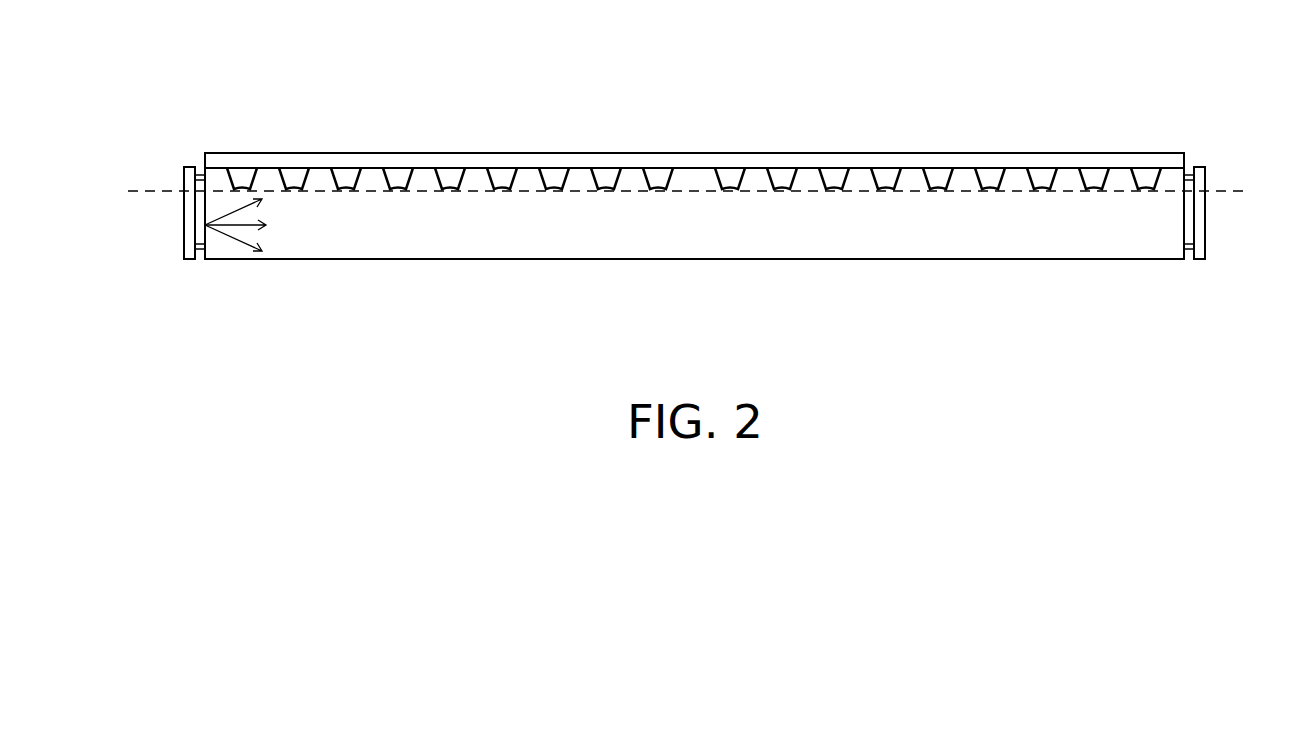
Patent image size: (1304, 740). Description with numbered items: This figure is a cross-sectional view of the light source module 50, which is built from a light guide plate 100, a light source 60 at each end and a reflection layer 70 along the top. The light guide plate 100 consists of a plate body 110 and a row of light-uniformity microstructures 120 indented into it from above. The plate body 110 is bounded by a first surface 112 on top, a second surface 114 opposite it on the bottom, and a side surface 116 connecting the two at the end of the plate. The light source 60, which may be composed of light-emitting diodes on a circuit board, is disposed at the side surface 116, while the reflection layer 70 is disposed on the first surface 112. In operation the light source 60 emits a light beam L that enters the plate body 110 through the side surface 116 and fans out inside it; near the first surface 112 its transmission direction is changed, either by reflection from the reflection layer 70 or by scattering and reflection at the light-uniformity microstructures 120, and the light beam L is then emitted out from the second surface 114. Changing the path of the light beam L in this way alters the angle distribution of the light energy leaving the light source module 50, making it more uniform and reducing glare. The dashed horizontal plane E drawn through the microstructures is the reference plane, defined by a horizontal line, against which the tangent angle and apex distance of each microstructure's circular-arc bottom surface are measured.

The light source module 50 is at (1262, 372).
The light source 60 is at (183, 183).
The reflection layer 70 is at (1117, 155).
The light guide plate 100 is at (643, 210).
The plate body 110 is at (280, 207).
The first surface 112 is at (481, 165).
The second surface 114 is at (482, 260).
The side surface 116 is at (205, 223).
The light-uniformity microstructures 120 is at (307, 186).
The light beam L is at (243, 230).
The horizontal plane E is at (699, 192).